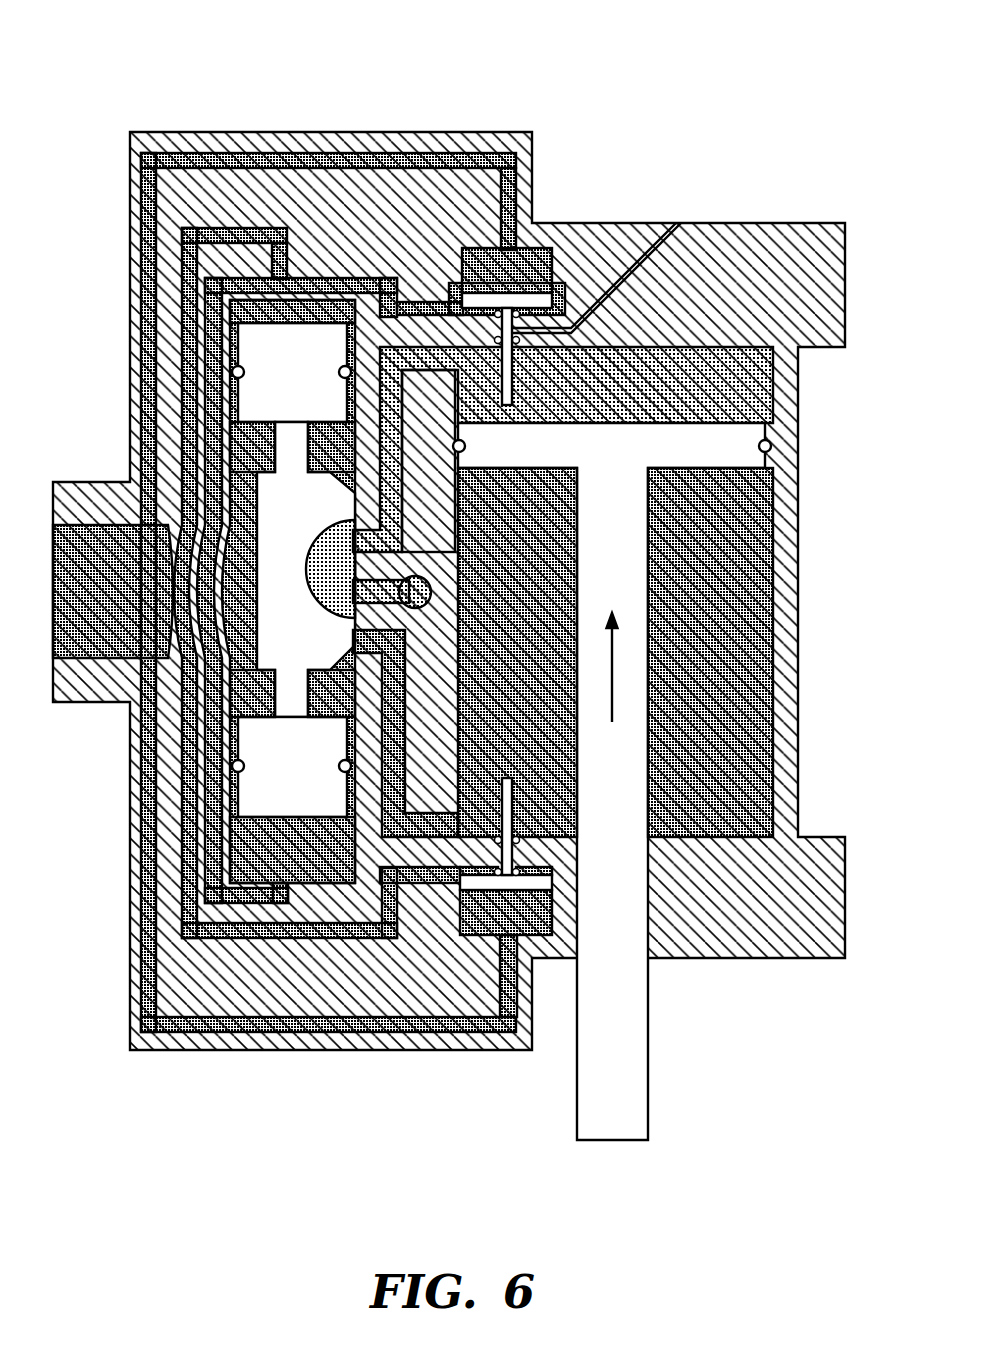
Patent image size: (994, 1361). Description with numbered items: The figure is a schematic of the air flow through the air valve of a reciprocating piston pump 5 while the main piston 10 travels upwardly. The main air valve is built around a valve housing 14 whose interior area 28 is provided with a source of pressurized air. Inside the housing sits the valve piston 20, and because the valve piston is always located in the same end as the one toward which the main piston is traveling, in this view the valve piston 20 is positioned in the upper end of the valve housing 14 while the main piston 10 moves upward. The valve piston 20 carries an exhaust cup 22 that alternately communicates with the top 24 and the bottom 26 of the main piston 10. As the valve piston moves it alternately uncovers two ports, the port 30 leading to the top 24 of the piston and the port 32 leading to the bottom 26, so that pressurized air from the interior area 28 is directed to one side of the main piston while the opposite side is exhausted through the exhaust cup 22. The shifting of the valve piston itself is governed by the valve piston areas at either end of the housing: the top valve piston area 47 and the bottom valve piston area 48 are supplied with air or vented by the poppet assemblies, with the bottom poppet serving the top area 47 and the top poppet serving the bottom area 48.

The reciprocating piston pump 5 is at (716, 64).
The main piston 10 is at (631, 460).
The valve housing 14 is at (140, 873).
The valve piston 20 is at (308, 641).
The exhaust cup 22 is at (330, 543).
The top of piston 24 is at (631, 397).
The bottom of piston 26 is at (723, 657).
The interior area 28 is at (247, 445).
The port 30 is at (393, 447).
The port 32 is at (393, 732).
The top valve piston area 47 is at (247, 312).
The bottom valve piston area 48 is at (308, 863).